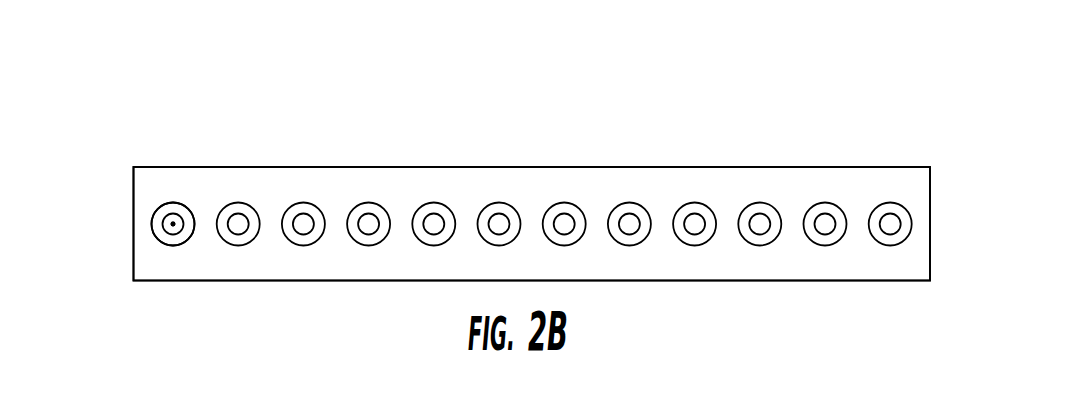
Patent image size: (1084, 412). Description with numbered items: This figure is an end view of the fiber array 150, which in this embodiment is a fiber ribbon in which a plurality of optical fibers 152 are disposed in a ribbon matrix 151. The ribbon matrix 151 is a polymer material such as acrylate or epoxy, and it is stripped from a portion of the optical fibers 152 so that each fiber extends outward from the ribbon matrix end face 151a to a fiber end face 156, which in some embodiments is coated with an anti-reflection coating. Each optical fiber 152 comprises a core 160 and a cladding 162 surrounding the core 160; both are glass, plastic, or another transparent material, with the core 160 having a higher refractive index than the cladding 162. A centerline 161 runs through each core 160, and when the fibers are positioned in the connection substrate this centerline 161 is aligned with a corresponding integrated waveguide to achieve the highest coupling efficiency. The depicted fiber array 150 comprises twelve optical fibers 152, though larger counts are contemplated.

The fiber array 150 is at (750, 112).
The ribbon matrix 151 is at (262, 167).
The ribbon matrix end face 151a is at (234, 198).
The optical fiber 152 is at (165, 246).
The fiber end face 156 is at (167, 219).
The core 160 is at (176, 228).
The centerline 161 is at (170, 221).
The cladding 162 is at (152, 232).